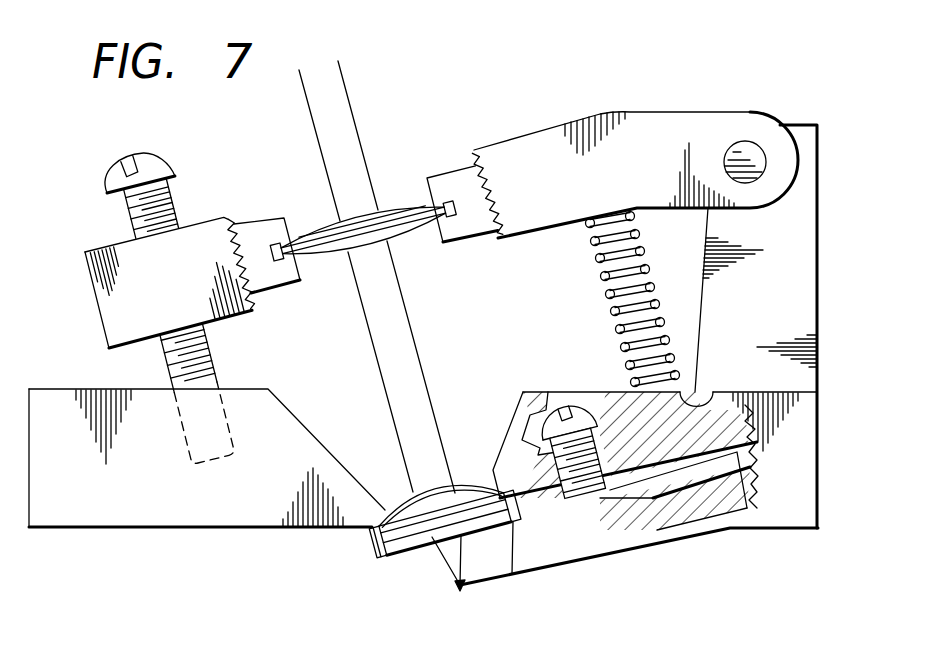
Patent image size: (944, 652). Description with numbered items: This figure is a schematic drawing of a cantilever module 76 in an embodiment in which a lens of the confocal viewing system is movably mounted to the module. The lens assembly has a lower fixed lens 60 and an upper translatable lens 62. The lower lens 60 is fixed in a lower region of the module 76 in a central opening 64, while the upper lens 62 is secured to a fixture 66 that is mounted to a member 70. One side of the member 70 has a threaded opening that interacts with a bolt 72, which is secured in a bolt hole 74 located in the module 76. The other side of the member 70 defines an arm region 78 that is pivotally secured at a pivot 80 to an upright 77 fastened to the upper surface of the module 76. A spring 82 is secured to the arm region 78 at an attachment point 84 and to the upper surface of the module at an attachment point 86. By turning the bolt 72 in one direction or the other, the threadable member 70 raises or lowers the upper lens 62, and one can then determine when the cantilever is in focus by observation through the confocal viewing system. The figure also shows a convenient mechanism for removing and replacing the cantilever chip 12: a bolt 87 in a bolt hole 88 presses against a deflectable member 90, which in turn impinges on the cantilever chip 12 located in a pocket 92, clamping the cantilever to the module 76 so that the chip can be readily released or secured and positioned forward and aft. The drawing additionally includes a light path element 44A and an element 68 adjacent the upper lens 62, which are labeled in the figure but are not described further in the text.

The cantilever chip 12 is at (538, 553).
The light beam 44A is at (347, 83).
The lower fixed lens 60 is at (393, 543).
The upper translatable lens 62 is at (390, 213).
The central opening 64 is at (387, 508).
The fixture 66 is at (263, 233).
The lens holder 68 is at (460, 183).
The member 70 is at (127, 318).
The bolt 72 is at (118, 177).
The bolt hole 74 is at (193, 432).
The module 76 is at (83, 500).
The upright 77 is at (790, 278).
The arm region 78 is at (660, 127).
The pivot 80 is at (743, 143).
The spring 82 is at (603, 300).
The spring attachment point on arm region 84 is at (590, 218).
The spring attachment point on module 86 is at (713, 392).
The bolt 87 is at (567, 393).
The bolt hole 88 is at (545, 393).
The deflectable member 90 is at (690, 473).
The pocket 92 is at (657, 527).